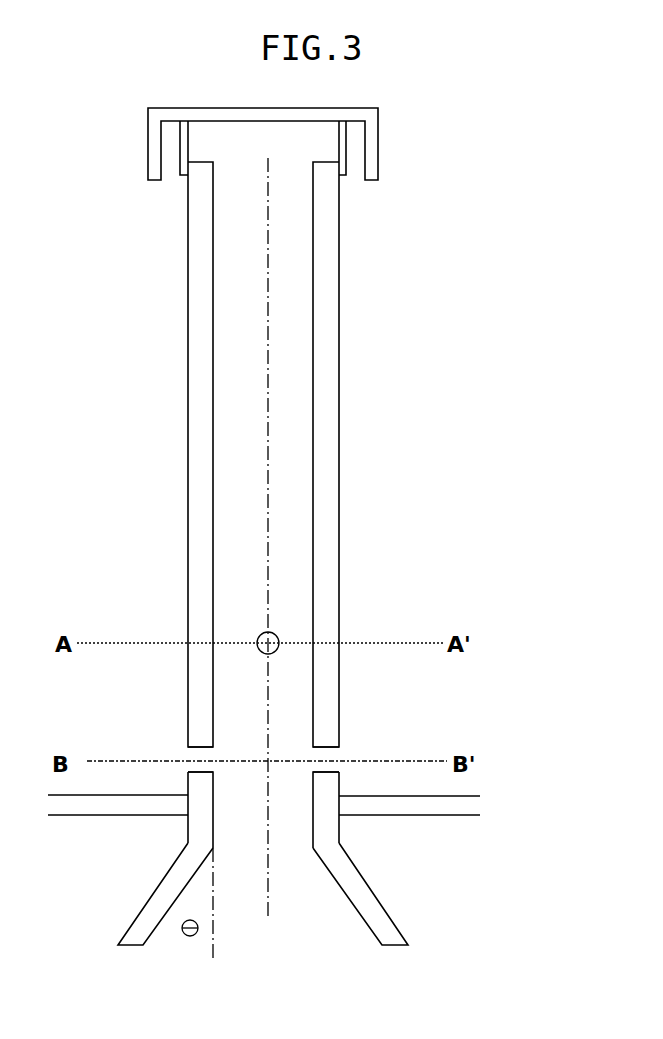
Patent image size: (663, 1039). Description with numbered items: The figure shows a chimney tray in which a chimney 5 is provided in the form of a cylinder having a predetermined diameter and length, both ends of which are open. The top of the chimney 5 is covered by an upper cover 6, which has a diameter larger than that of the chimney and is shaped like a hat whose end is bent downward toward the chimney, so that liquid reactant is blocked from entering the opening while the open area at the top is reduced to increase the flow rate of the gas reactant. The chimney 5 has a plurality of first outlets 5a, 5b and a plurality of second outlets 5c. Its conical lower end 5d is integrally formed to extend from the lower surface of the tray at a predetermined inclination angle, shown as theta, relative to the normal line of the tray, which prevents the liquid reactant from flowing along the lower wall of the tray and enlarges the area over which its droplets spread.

The upper cover 6 is at (382, 135).
The chimney 5 is at (342, 303).
The second outlets 5c is at (269, 626).
The first outlet 5b is at (182, 742).
The first outlet 5a is at (350, 752).
The conical lower end 5d is at (425, 881).